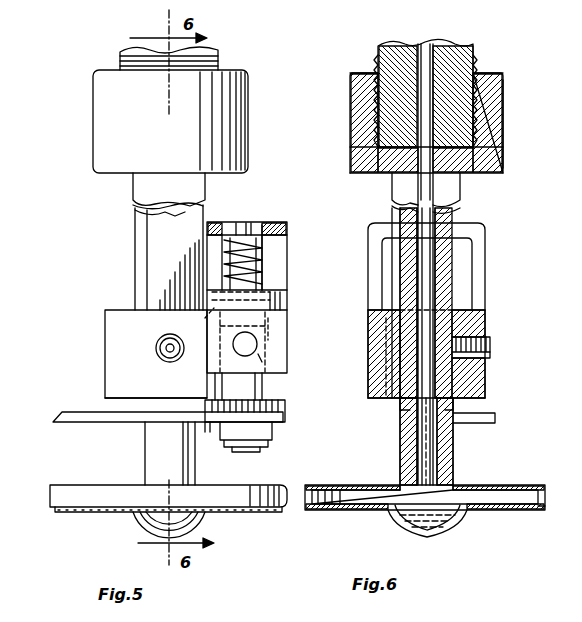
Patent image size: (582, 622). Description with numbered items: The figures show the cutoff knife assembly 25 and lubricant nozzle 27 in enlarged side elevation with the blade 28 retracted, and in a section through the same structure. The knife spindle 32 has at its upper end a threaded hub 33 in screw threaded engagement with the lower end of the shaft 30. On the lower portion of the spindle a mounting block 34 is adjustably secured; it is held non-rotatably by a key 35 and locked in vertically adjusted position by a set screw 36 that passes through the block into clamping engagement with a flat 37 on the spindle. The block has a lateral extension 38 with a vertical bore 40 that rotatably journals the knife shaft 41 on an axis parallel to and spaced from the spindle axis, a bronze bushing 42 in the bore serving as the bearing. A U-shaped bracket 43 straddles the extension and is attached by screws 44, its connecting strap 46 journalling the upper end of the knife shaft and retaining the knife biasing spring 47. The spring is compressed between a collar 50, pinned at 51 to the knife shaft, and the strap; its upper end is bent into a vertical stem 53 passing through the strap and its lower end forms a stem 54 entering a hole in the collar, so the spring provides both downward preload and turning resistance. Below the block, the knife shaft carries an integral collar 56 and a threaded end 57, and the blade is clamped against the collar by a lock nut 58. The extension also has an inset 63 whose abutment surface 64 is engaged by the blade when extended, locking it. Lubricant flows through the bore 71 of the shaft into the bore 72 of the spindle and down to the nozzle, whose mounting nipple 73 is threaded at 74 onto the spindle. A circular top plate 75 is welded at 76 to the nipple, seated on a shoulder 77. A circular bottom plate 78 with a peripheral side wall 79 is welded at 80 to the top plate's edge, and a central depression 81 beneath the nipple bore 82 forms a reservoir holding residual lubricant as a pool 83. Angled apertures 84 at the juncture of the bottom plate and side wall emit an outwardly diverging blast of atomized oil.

In FIG. 5, the holder assembly 25 is at (94, 376).
In FIG. 5, the nozzle 27 is at (52, 486).
In FIG. 6, the nozzle 27 is at (324, 476).
In FIG. 5, the blade 28 is at (76, 422).
In FIG. 6, the blade 28 is at (490, 423).
In FIG. 5, the shaft 30 is at (214, 52).
In FIG. 6, the shaft 30 is at (475, 52).
In FIG. 5, the knife spindle 32 is at (95, 132).
In FIG. 6, the knife spindle 32 is at (345, 126).
In FIG. 5, the threaded hub 33 is at (222, 99).
In FIG. 6, the threaded hub 33 is at (488, 97).
In FIG. 5, the mounting block 34 is at (120, 340).
In FIG. 6, the mounting block 34 is at (487, 322).
In FIG. 6, the key 35 is at (388, 371).
In FIG. 5, the set screw 36 is at (158, 349).
In FIG. 6, the set screw 36 is at (490, 347).
In FIG. 5, the flat 37 is at (152, 278).
In FIG. 6, the flat 37 is at (452, 272).
In FIG. 5, the lateral extension 38 is at (282, 358).
In FIG. 5, the vertical bore 40 is at (272, 344).
In FIG. 5, the knife shaft 41 is at (262, 250).
In FIG. 5, the bronze bushing 42 is at (268, 352).
In FIG. 5, the U-shaped bracket 43 is at (288, 238).
In FIG. 6, the U-shaped bracket 43 is at (487, 232).
In FIG. 5, the screws 44 is at (262, 352).
In FIG. 5, the connecting strap 46 is at (276, 222).
In FIG. 6, the connecting strap 46 is at (392, 226).
In FIG. 5, the knife biasing spring 47 is at (262, 268).
In FIG. 5, the collar 50 is at (272, 301).
In FIG. 5, the pin 51 is at (202, 322).
In FIG. 5, the vertical stem 53 is at (236, 226).
In FIG. 5, the stem 54 is at (272, 288).
In FIG. 5, the integral collar 56 is at (285, 410).
In FIG. 5, the threaded end 57 is at (246, 452).
In FIG. 5, the lock nut 58 is at (272, 432).
In FIG. 5, the inset 63 is at (270, 373).
In FIG. 5, the abutment surface 64 is at (210, 432).
In FIG. 6, the bore 71 is at (425, 52).
In FIG. 6, the bore 72 is at (427, 297).
In FIG. 5, the mounting nipple 73 is at (195, 468).
In FIG. 6, the mounting nipple 73 is at (453, 443).
In FIG. 6, the threaded upper end 74 is at (455, 405).
In FIG. 6, the circular top plate 75 is at (352, 485).
In FIG. 6, the weld 76 is at (460, 485).
In FIG. 6, the shoulder 77 is at (402, 487).
In FIG. 5, the circular bottom plate 78 is at (92, 514).
In FIG. 6, the circular bottom plate 78 is at (508, 512).
In FIG. 6, the peripheral side wall 79 is at (546, 510).
In FIG. 6, the weld 80 is at (310, 486).
In FIG. 5, the depression 81 is at (200, 522).
In FIG. 6, the depression 81 is at (455, 528).
In FIG. 6, the bore 82 is at (400, 443).
In FIG. 6, the pool 83 is at (400, 530).
In FIG. 5, the apertures 84 is at (60, 512).
In FIG. 6, the apertures 84 is at (310, 512).